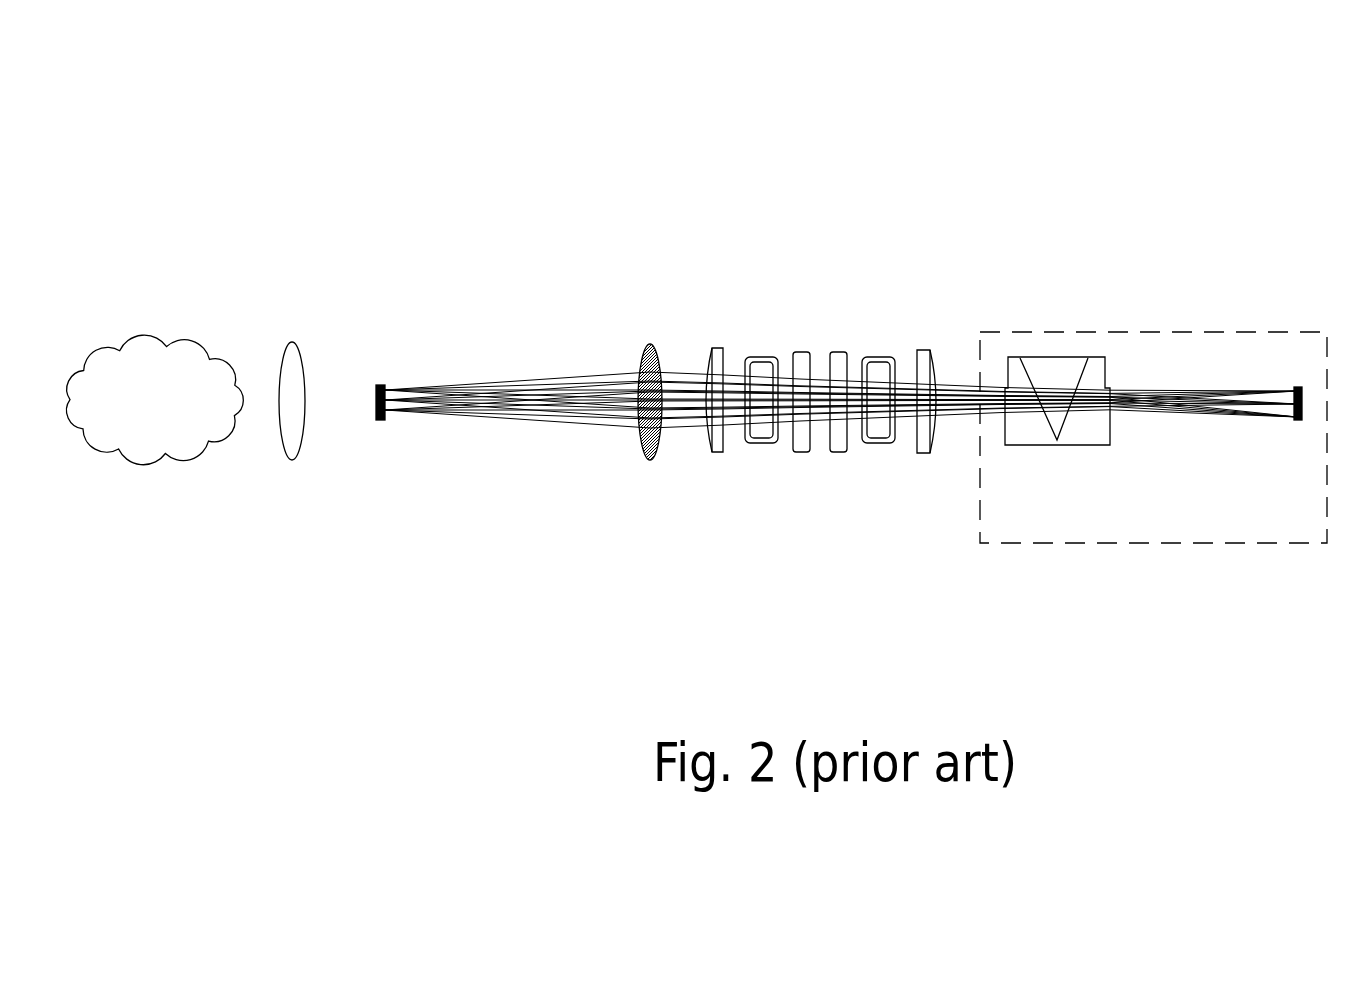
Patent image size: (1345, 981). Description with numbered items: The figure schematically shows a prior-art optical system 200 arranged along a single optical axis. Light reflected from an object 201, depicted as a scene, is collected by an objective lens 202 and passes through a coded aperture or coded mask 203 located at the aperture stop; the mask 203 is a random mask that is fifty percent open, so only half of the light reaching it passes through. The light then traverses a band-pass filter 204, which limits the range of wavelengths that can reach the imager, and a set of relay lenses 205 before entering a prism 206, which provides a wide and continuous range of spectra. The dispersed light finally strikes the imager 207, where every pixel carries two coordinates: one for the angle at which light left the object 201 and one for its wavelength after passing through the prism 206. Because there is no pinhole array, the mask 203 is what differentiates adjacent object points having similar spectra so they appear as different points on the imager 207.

The optical system 200 is at (792, 155).
The object 201 is at (163, 342).
The objective lens 202 is at (293, 343).
The coded aperture or coded mask 203 is at (385, 378).
The band-pass filter 204 is at (657, 342).
The relay lenses 205 is at (833, 335).
The prism 206 is at (1065, 355).
The imager 207 is at (1298, 385).